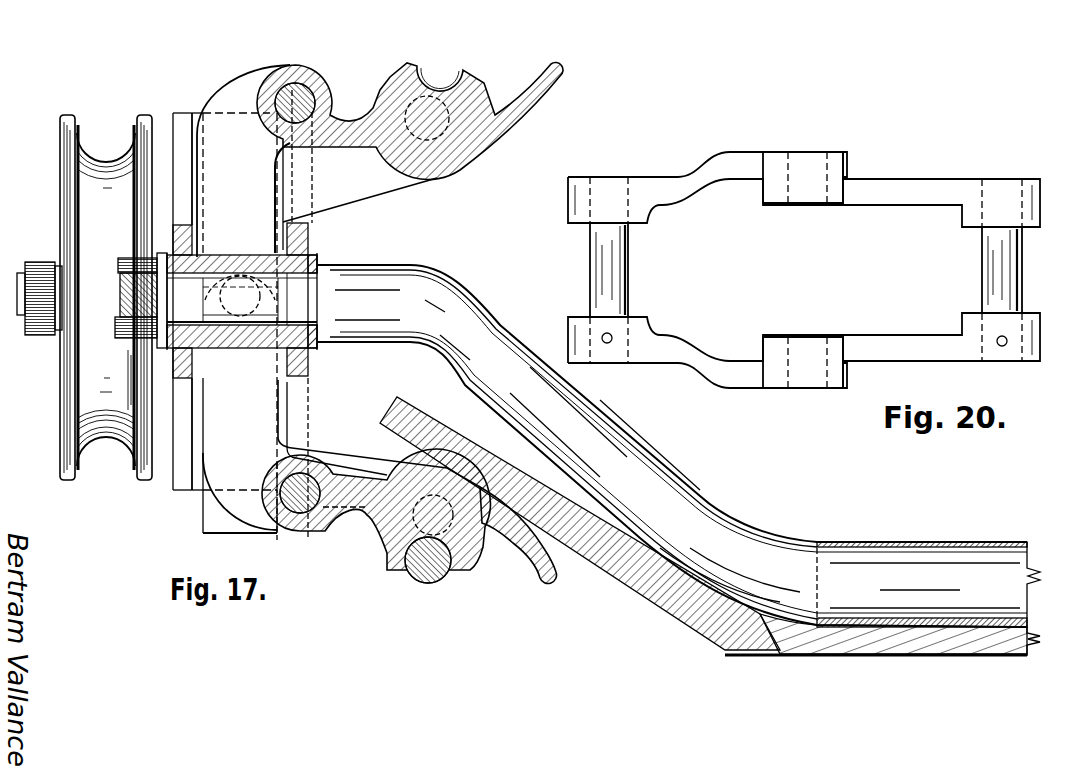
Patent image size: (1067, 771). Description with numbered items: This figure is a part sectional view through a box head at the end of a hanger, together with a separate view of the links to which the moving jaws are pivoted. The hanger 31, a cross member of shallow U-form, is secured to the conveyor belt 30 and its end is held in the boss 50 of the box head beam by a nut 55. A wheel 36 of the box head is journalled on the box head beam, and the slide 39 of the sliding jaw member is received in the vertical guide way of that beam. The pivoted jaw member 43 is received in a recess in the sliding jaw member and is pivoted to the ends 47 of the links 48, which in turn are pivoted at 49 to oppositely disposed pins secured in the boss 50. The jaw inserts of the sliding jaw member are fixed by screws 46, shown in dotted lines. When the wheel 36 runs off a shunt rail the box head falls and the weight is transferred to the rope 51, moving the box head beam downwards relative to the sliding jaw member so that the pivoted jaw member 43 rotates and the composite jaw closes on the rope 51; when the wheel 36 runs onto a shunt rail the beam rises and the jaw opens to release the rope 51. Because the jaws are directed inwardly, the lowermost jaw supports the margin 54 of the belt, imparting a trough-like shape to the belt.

In FIG. 17, the wheel 36 is at (106, 160).
In FIG. 17, the nut 55 is at (126, 262).
In FIG. 17, the slide 39 is at (203, 504).
In FIG. 17, the pivot 49 is at (253, 257).
In FIG. 20, the pivot 49 is at (807, 198).
In FIG. 17, the boss 50 is at (323, 258).
In FIG. 17, the hanger 31 is at (935, 553).
In FIG. 17, the margin of the belt 54 is at (416, 415).
In FIG. 17, the conveyor belt 30 is at (912, 650).
In FIG. 17, the pivoted jaw member 43 is at (356, 110).
In FIG. 17, the screw 46 is at (461, 174).
In FIG. 17, the end of link 47 is at (313, 84).
In FIG. 20, the end of link 47 is at (590, 262).
In FIG. 17, the rope 51 is at (423, 583).
In FIG. 20, the link 48 is at (870, 360).